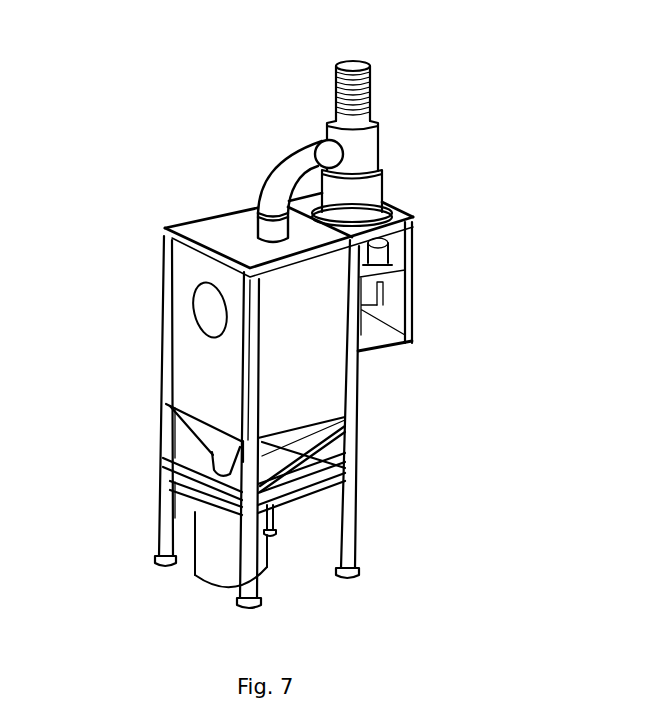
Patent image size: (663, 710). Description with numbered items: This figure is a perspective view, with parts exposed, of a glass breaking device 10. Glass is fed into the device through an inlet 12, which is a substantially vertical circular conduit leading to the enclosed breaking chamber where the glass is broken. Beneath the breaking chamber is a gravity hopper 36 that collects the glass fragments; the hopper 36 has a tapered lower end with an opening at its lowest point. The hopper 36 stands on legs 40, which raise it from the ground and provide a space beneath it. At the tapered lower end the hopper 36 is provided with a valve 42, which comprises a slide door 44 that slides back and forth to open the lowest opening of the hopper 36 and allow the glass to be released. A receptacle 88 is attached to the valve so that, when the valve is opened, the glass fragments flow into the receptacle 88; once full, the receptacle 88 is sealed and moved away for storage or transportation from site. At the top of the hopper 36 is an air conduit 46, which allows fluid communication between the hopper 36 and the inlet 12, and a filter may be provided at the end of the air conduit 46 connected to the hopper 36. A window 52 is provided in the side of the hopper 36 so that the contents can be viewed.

The glass breaking device 10 is at (395, 277).
The inlet 12 is at (367, 151).
The gravity hopper 36 is at (187, 392).
The legs 40 is at (353, 550).
The valve 42 is at (215, 513).
The slide door 44 is at (170, 502).
The air conduit 46 is at (287, 183).
The window 52 is at (207, 293).
The receptacle 88 is at (267, 567).